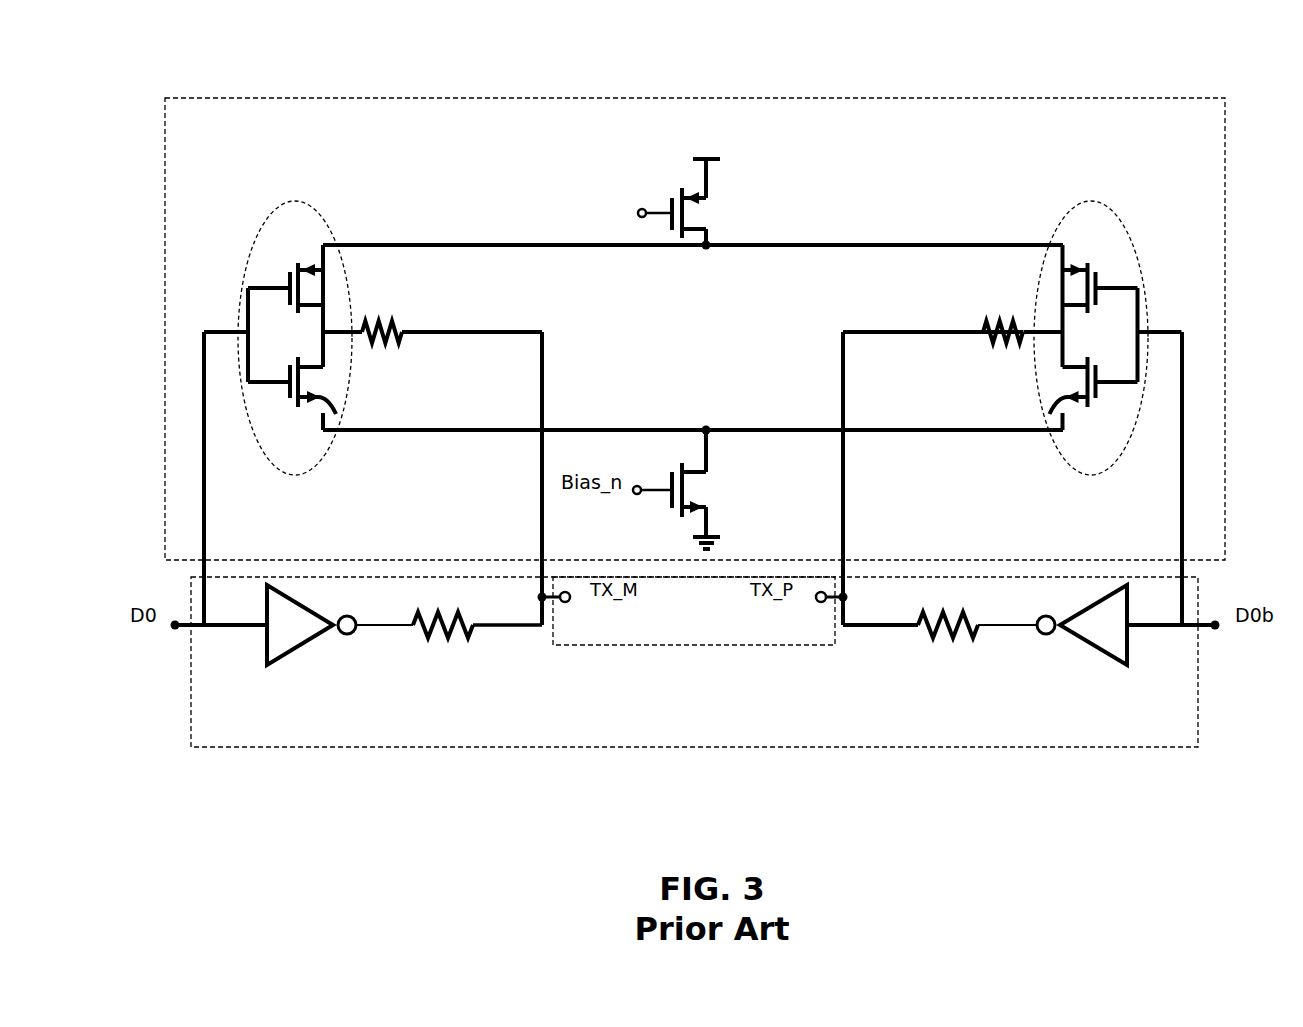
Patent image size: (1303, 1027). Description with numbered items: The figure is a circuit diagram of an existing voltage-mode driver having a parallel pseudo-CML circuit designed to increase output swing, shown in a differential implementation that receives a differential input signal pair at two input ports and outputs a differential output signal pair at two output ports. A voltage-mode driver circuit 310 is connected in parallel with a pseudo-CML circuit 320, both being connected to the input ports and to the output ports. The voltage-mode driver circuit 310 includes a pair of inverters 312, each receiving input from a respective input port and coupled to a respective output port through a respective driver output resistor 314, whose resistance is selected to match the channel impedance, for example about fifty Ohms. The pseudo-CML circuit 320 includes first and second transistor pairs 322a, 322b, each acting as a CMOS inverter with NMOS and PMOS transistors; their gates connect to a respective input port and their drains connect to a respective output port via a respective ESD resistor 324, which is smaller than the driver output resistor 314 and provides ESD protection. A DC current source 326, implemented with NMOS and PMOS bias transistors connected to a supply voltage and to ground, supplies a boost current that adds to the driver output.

The voltage-mode driver circuit 310 is at (370, 748).
The inverter 312 is at (308, 645).
The driver output resistor 314 is at (440, 648).
The pseudo-CML circuit 320 is at (348, 98).
The first transistor pair 322a is at (295, 202).
The second transistor pair 322b is at (1093, 202).
The electrostatic discharge (ESD) resistor 324 is at (393, 343).
The DC current source 326 is at (640, 175).